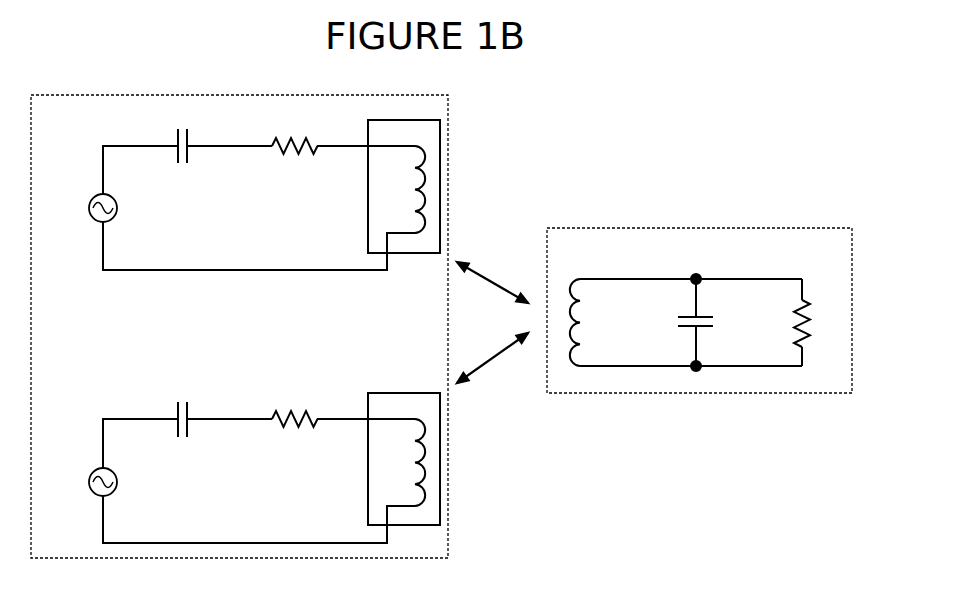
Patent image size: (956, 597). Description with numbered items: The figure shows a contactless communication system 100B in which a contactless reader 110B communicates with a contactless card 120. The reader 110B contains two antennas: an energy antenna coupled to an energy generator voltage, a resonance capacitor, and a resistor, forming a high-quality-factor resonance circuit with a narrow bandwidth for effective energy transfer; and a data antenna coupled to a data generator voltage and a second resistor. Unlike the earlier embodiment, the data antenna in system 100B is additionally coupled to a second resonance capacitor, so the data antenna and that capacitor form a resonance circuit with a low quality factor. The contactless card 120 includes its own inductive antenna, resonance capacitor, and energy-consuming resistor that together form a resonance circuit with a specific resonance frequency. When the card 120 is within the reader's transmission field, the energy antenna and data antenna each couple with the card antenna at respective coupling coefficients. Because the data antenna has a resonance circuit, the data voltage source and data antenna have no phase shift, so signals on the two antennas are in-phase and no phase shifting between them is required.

The contactless communication system 100B is at (725, 118).
The contactless reader 110B is at (241, 317).
The contactless card 120 is at (699, 300).